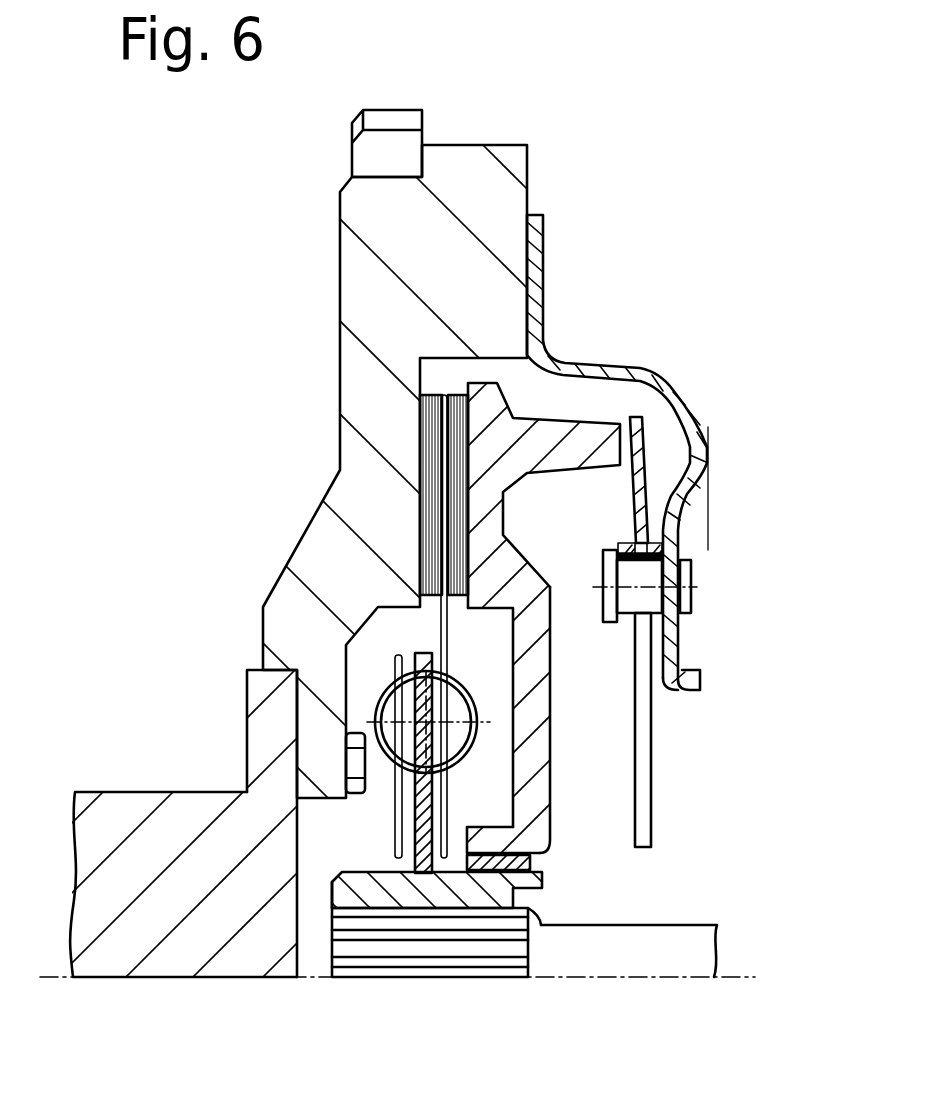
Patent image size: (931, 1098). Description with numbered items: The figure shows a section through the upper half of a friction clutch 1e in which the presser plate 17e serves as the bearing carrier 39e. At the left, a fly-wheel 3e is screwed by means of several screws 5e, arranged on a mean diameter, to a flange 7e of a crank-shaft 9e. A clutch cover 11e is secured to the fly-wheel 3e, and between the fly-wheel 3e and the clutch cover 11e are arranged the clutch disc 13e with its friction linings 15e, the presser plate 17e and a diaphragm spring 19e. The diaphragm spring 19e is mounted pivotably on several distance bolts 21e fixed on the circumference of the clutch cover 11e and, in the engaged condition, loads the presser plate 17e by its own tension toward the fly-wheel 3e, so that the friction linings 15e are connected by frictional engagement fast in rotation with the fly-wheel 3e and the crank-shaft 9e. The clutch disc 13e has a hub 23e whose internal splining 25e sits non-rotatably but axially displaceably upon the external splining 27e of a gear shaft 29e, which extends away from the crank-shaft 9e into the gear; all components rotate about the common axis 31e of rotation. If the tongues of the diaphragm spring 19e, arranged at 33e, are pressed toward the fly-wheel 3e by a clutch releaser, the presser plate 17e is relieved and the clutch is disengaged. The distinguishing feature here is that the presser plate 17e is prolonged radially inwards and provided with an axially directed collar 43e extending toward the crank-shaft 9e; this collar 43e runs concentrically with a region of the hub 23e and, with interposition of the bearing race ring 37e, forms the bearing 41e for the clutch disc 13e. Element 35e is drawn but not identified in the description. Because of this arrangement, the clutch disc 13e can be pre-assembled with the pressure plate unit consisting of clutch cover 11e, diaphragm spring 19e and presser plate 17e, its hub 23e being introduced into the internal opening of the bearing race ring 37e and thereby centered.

The friction clutch 1e is at (648, 208).
The fly-wheel 3e is at (377, 285).
The screws 5e is at (346, 754).
The flange 7e is at (270, 700).
The crank-shaft 9e is at (123, 880).
The clutch cover 11e is at (690, 404).
The clutch disc 13e is at (387, 643).
The friction linings 15e is at (457, 483).
The presser plate 17e is at (567, 437).
The diaphragm spring 19e is at (641, 480).
The distance bolts 21e is at (650, 575).
The hub 23e is at (458, 890).
The internal splining 25e is at (332, 900).
The external splining 27e is at (390, 945).
The gear shaft 29e is at (615, 957).
The axis of rotation 31e is at (740, 980).
The tongues of the diaphragm spring 33e is at (643, 730).
The sleeve / pin 35e is at (448, 863).
The bearing race ring 37e is at (537, 860).
The bearing carrier 39e is at (531, 700).
The bearing 41e is at (556, 890).
The collar 43e is at (503, 843).